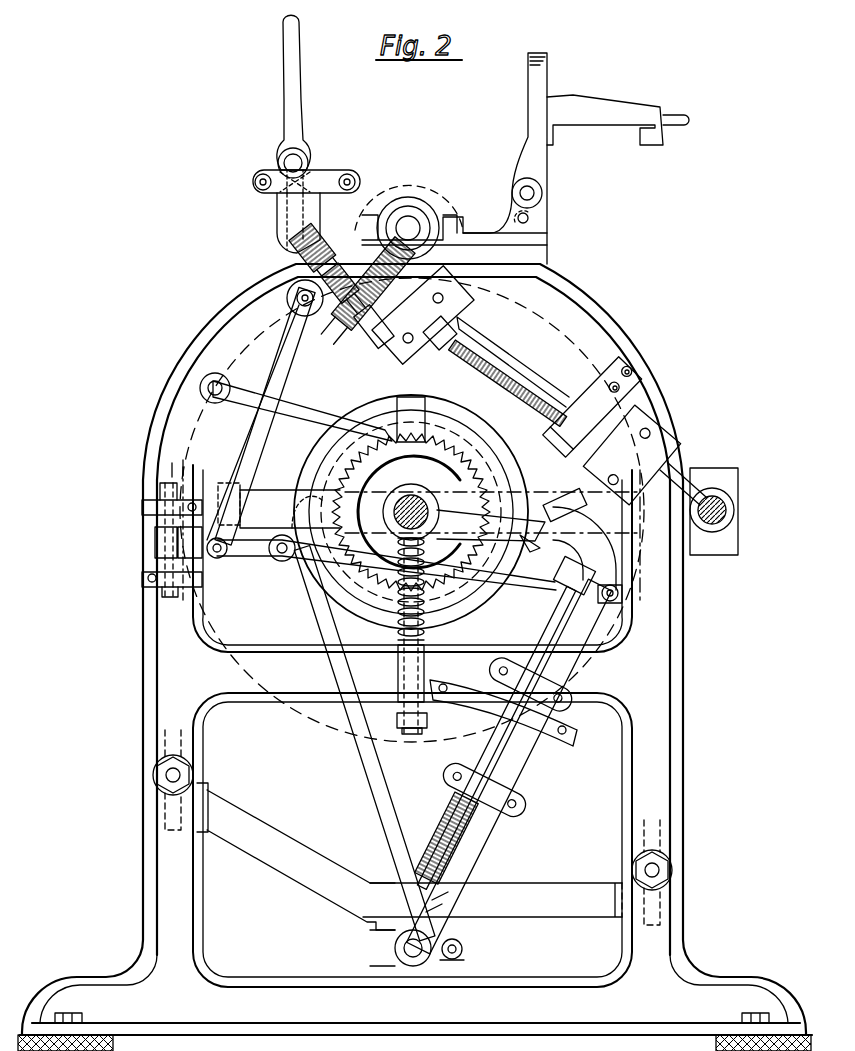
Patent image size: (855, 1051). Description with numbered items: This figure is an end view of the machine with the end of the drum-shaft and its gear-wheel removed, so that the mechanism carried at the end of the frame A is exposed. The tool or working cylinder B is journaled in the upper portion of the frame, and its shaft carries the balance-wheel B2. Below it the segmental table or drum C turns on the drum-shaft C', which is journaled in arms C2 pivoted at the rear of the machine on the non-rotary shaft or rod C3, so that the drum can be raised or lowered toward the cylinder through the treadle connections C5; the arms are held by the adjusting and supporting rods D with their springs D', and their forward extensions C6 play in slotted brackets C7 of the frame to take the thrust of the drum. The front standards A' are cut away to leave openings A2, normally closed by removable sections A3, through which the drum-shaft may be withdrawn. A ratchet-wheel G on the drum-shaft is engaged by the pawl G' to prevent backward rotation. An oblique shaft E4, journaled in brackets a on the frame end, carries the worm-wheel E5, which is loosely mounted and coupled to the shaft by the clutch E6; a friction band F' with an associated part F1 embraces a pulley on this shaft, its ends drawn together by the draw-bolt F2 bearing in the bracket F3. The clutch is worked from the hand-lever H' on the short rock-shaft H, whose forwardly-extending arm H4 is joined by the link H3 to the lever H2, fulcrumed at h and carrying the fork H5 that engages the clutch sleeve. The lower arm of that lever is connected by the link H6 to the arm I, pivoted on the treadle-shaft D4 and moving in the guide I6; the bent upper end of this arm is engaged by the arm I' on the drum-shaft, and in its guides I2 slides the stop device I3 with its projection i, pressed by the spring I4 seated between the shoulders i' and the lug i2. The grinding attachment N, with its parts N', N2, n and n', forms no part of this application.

The frame A is at (415, 633).
The front standards A' is at (140, 525).
The openings A2 is at (148, 572).
The removable sections A3 is at (150, 540).
The tool or working cylinder B is at (440, 196).
The balance-wheel B2 is at (410, 215).
The segmental table or drum C is at (412, 517).
The drum-shaft C' is at (409, 512).
The arms C2 is at (552, 503).
The non-rotary shaft or rod C3 is at (736, 510).
The connections C5 is at (387, 803).
The forward extensions C6 is at (290, 510).
The slotted brackets C7 is at (228, 490).
The adjusting and supporting rods D is at (426, 640).
The springs D' is at (479, 589).
The treadle-shaft D4 is at (400, 948).
The oblique shaft E4 is at (492, 372).
The worm-wheel E5 is at (348, 328).
The clutch E6 is at (298, 258).
The friction band or strap F' is at (549, 387).
The slide pin F1 is at (600, 440).
The draw-bolt F2 is at (620, 388).
The bracket F3 is at (634, 372).
The ratchet-wheel G is at (411, 512).
The pawl G' is at (296, 407).
The rock-shaft H is at (272, 156).
The hand-lever H' is at (308, 92).
The lever H2 is at (292, 338).
The link H3 is at (333, 175).
The forwardly-extending arm H4 is at (258, 179).
The fork H5 is at (330, 213).
The link H6 is at (282, 562).
The fulcrum h is at (296, 299).
The arm I is at (509, 766).
The arm I' is at (527, 554).
The guides I2 is at (563, 727).
The stop device I3 is at (565, 618).
The spring I4 is at (467, 853).
The guide I6 is at (563, 753).
The projection i is at (602, 572).
The shoulders i' is at (549, 695).
The lug i2 is at (463, 903).
The grinding attachment N is at (618, 103).
The post N' is at (505, 158).
The pivot N2 is at (540, 203).
The pin n is at (549, 227).
The slot n' is at (549, 237).
The brackets a is at (405, 338).